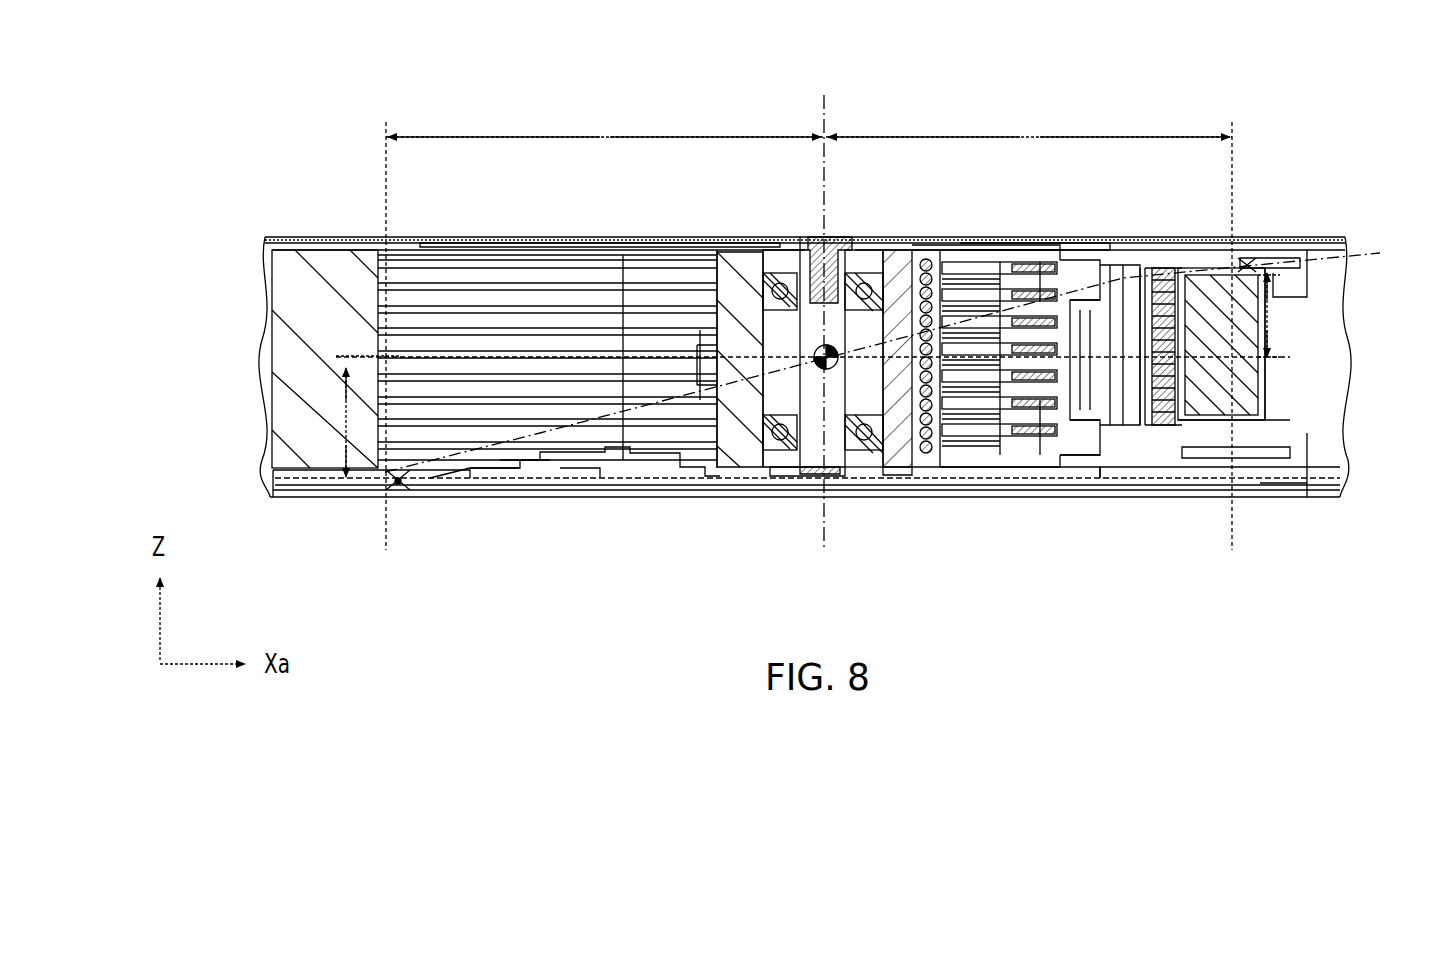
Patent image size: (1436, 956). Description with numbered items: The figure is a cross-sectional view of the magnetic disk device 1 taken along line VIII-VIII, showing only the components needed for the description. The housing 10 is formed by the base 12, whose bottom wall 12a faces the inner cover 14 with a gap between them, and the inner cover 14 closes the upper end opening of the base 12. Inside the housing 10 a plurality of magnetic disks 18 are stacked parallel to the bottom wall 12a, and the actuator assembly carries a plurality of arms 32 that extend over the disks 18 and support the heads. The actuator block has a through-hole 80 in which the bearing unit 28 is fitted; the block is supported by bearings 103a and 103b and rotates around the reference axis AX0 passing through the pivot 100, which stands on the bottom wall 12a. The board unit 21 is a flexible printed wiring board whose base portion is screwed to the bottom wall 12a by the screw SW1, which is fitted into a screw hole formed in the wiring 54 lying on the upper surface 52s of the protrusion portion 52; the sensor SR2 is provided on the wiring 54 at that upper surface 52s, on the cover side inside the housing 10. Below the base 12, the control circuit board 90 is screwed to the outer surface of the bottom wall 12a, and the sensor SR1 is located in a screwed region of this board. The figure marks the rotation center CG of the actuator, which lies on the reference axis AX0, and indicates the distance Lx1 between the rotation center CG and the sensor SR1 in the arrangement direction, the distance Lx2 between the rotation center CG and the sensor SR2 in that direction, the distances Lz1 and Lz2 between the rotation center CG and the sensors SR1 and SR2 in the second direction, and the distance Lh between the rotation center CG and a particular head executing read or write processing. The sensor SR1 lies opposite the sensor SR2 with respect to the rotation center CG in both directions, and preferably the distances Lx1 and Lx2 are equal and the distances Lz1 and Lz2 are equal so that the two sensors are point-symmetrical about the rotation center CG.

The magnetic disk device 1 is at (1408, 122).
The housing 10 is at (245, 240).
The base 12 is at (266, 361).
The bottom wall 12a is at (573, 482).
The inner cover 14 is at (358, 237).
The magnetic disk 18 is at (523, 488).
The board unit 21 is at (1268, 386).
The bearing unit 28 is at (880, 480).
The arm 32 is at (980, 480).
The protrusion portion 52 is at (1213, 470).
The upper surface of protrusion portion 52s is at (1278, 245).
The wiring 54 is at (1292, 262).
The through-hole 80 is at (766, 470).
The control circuit board 90 is at (290, 500).
The pivot 100 is at (849, 475).
The bearing 103a is at (800, 238).
The bearing 103b is at (803, 478).
The screw SW1 is at (1133, 470).
The sensor SR1 is at (398, 488).
The sensor SR2 is at (1247, 262).
The rotation center CG is at (834, 345).
The reference axis AX0 is at (823, 96).
The distance Lx1 is at (604, 123).
The distance Lx2 is at (1029, 123).
The distance Lz1 is at (333, 482).
The distance Lz2 is at (1272, 318).
The distance Lh is at (1160, 470).
The section line VIII is at (1345, 522).